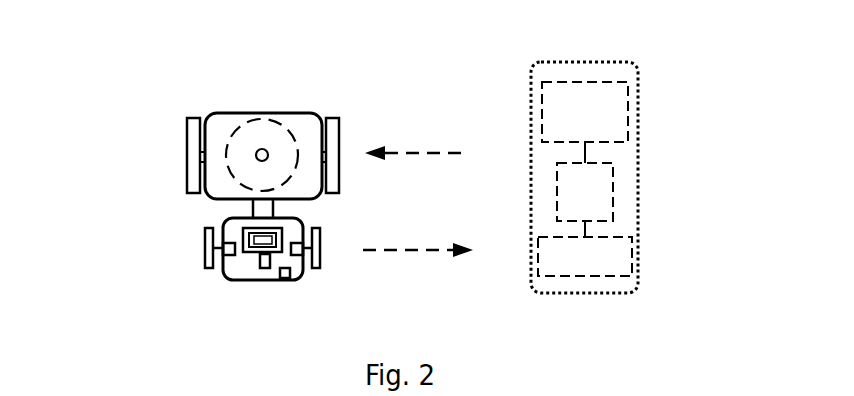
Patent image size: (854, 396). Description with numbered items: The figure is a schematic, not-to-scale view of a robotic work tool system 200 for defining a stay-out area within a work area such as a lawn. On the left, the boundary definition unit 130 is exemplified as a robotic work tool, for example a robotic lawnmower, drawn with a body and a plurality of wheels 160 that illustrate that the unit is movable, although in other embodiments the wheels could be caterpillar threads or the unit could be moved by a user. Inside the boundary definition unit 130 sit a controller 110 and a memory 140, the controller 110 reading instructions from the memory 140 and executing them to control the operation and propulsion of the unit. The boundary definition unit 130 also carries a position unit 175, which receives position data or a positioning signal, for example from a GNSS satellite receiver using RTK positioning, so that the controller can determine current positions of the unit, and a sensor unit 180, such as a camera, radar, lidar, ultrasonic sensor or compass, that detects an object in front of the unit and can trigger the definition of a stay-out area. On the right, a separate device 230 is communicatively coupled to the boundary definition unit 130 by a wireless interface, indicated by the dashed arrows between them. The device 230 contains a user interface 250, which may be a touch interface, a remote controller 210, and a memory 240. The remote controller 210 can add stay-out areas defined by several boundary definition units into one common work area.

The robotic work tool system 200 is at (283, 48).
The boundary definition unit 130 is at (172, 122).
The controller 110 is at (262, 230).
The memory 140 is at (243, 235).
The wheels 160 is at (205, 266).
The position unit 175 is at (260, 262).
The sensor unit 180 is at (280, 273).
The device 230 is at (637, 63).
The user interface 250 is at (628, 125).
The remote controller 210 is at (613, 200).
The memory 240 is at (632, 265).